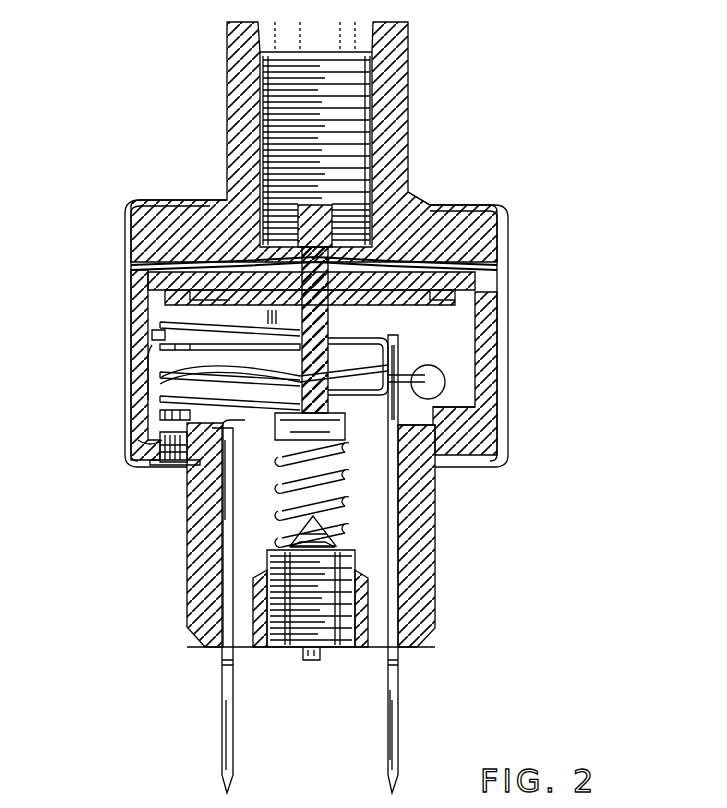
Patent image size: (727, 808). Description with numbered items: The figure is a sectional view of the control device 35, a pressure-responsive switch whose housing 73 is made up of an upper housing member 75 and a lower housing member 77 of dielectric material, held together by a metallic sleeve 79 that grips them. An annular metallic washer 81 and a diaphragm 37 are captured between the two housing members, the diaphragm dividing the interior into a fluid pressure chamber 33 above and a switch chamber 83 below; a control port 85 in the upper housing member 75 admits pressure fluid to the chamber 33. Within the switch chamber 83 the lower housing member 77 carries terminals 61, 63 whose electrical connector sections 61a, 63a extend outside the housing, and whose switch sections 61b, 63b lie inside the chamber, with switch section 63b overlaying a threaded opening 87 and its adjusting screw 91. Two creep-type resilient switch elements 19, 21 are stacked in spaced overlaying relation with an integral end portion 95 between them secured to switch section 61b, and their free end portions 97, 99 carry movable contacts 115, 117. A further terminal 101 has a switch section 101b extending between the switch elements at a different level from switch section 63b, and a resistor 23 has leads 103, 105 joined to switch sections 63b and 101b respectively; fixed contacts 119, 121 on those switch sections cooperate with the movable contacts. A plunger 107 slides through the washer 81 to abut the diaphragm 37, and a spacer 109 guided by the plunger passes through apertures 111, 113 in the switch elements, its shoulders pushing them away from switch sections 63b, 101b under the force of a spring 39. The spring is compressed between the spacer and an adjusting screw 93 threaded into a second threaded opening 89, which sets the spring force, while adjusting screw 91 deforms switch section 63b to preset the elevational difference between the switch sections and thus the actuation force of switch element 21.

The control device 35 is at (536, 80).
The housing 73 is at (172, 168).
The upper housing member 75 is at (228, 90).
The control port 85 is at (409, 58).
The diaphragm 37 is at (425, 215).
The fluid pressure chamber 33 is at (468, 212).
The annular washer 81 is at (497, 268).
The metallic sleeve 79 is at (480, 290).
The switch chamber 83 is at (485, 305).
The plunger 107 is at (338, 293).
The switch element 19 is at (376, 360).
The lead 103 is at (414, 372).
The resistor 23 is at (440, 375).
The lead 105 is at (490, 365).
The switch section 61b is at (490, 395).
The integral end portion 95 is at (358, 366).
The switch element 21 is at (345, 396).
The spacer 109 is at (336, 435).
The aperture 111 is at (277, 319).
The contact 119 is at (195, 348).
The aperture 113 is at (250, 380).
The free end portion 97 is at (165, 322).
The movable contact 115 is at (150, 333).
The switch section 101b is at (150, 348).
The free end portion 99 is at (150, 375).
The movable contact 117 is at (150, 397).
The terminal 101 is at (150, 420).
The contact 121 is at (132, 438).
The switch section 63b is at (145, 460).
The threaded opening 87 is at (152, 460).
The adjusting screw 91 is at (166, 465).
The lower housing member 77 is at (190, 597).
The spring 39 is at (340, 533).
The threaded opening 89 is at (288, 647).
The adjusting screw 93 is at (328, 647).
The electrical connector section 63a is at (222, 698).
The terminal 63 is at (222, 762).
The electrical connector section 61a is at (398, 680).
The terminal 61 is at (398, 745).